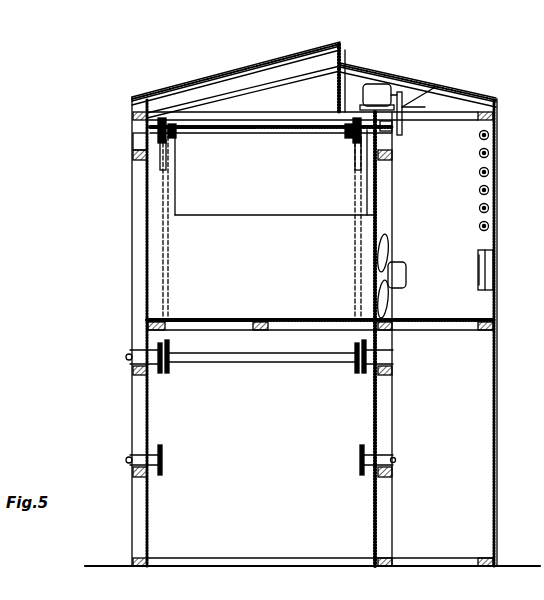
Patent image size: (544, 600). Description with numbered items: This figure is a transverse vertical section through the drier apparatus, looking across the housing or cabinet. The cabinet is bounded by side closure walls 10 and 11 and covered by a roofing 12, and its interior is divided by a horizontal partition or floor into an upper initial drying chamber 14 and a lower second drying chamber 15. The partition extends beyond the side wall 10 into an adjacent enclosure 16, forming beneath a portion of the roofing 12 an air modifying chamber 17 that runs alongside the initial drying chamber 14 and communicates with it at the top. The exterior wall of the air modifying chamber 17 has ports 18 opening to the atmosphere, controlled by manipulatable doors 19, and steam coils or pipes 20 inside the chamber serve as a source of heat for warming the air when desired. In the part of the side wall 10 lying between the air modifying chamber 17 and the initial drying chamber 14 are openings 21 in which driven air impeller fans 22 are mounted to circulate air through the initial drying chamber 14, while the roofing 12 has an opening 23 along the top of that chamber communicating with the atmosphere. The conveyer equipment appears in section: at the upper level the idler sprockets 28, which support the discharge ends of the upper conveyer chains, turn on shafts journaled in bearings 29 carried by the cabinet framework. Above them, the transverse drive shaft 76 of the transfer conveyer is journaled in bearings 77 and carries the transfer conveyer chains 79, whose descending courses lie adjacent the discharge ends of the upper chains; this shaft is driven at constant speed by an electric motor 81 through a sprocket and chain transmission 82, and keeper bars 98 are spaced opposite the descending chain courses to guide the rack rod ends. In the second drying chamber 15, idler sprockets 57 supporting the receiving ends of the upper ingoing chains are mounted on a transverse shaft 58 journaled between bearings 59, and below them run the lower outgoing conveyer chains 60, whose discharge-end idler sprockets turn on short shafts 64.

The side closure wall 10 is at (380, 197).
The side closure wall 11 is at (147, 260).
The roofing 12 is at (266, 63).
The upper initial drying chamber 14 is at (274, 172).
The lower second drying chamber 15 is at (224, 466).
The adjacent enclosure 16 is at (497, 217).
The air modifying chamber 17 is at (455, 175).
The ports 18 is at (494, 272).
The manipulatable doors 19 is at (478, 275).
The steam coils or pipes 20 is at (478, 152).
The openings 21 is at (389, 250).
The driven air impeller fans 22 is at (386, 298).
The opening 23 is at (344, 62).
The idler sprockets 28 is at (158, 168).
The bearings 29 is at (138, 142).
The idler sprockets 57 is at (163, 375).
The transverse shaft 58 is at (264, 357).
The bearings 59 is at (136, 350).
The endless conveyer chains 60 is at (161, 448).
The short shafts 64 is at (164, 462).
The transverse drive shaft 76 is at (246, 122).
The bearings 77 is at (137, 130).
The transfer conveyer chains 79 is at (170, 190).
The electric motor 81 is at (393, 86).
The sprocket and chain transmission 82 is at (430, 89).
The keeper bars 98 is at (172, 178).